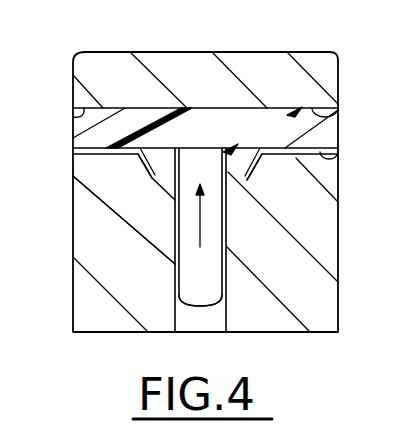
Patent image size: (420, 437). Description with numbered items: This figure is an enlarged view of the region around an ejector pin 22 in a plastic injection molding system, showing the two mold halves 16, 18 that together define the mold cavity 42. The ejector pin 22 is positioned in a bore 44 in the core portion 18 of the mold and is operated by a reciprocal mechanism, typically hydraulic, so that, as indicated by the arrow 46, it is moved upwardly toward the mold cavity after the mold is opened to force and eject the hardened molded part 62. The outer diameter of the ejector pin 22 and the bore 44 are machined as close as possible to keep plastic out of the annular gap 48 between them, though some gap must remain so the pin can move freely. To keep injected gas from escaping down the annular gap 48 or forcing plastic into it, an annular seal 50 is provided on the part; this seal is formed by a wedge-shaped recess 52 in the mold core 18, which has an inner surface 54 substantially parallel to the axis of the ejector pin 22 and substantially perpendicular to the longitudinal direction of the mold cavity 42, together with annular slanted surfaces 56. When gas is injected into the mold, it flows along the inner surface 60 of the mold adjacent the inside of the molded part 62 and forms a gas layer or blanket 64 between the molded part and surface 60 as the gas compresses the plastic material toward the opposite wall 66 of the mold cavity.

The mold half 16 is at (198, 61).
The mold half 18 is at (73, 232).
The ejector pin 22 is at (214, 277).
The mold cavity 42 is at (338, 113).
The bore 44 is at (176, 265).
The arrow 46 is at (200, 218).
The annular gap 48 is at (227, 147).
The annular seal 50 is at (250, 164).
The wedge-shaped recess 52 is at (124, 220).
The inner surface 54 is at (152, 170).
The annular slanted surface 56 is at (148, 171).
The inner surface of the mold 60 is at (339, 160).
The molded part 62 is at (276, 142).
The gas layer 64 is at (73, 151).
The opposite wall 66 is at (73, 116).